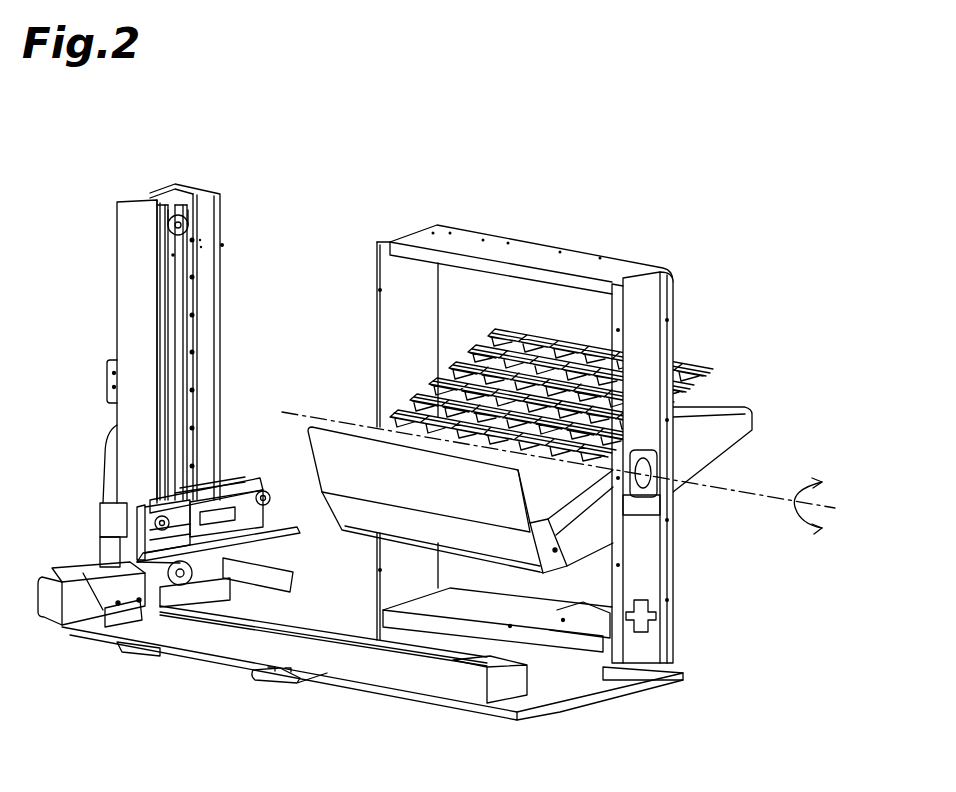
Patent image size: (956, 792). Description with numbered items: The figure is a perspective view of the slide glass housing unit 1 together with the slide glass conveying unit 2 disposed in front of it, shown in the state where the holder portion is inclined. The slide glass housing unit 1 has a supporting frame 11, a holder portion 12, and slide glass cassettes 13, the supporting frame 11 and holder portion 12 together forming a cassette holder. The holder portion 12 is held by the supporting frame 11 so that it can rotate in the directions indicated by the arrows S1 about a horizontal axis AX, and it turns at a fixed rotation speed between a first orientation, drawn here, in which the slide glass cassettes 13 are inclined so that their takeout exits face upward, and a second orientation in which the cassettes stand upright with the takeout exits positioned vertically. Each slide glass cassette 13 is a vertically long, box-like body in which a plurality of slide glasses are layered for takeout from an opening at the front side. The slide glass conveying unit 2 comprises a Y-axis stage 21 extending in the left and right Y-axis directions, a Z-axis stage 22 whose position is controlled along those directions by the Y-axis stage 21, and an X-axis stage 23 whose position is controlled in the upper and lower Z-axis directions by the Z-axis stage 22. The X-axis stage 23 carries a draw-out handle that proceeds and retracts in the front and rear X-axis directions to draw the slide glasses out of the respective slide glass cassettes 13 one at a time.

The slide glass housing unit 1 is at (411, 222).
The supporting frame 11 is at (566, 243).
The holder portion 12 is at (732, 405).
The slide glass cassettes 13 is at (547, 325).
The slide glass conveying unit 2 is at (100, 436).
The Y-axis stage 21 is at (227, 653).
The Z-axis stage 22 is at (117, 320).
The X-axis stage 23 is at (117, 550).
The horizontal axis AX is at (574, 470).
The rotation directions S1 is at (798, 524).